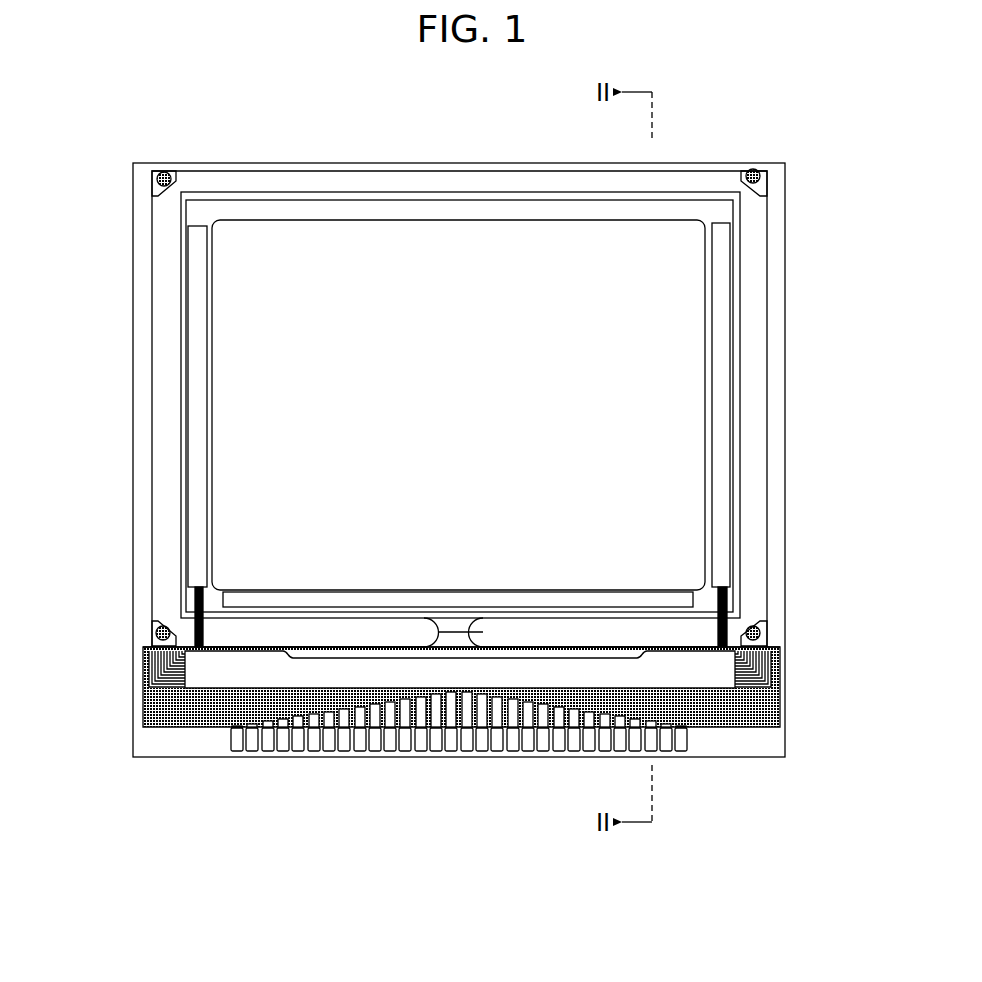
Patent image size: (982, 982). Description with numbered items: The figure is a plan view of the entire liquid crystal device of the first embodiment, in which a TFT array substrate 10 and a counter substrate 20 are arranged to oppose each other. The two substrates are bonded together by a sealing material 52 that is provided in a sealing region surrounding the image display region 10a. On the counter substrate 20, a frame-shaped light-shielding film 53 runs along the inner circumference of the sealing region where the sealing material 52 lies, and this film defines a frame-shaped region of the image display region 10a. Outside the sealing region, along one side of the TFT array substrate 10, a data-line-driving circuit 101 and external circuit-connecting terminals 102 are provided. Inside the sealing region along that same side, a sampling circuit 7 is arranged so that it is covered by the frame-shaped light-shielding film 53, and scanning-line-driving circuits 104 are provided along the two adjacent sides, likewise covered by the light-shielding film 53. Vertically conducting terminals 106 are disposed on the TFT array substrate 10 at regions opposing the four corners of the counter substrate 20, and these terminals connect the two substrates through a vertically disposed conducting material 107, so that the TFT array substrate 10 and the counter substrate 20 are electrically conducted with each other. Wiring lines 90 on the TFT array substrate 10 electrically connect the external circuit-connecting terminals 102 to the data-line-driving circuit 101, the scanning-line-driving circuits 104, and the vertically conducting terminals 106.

The TFT array substrate 10 is at (266, 163).
The counter substrate 20 is at (479, 171).
The image display region 10a is at (258, 353).
The sealing material 52 is at (752, 330).
The scanning-line-driving circuits 104 is at (726, 406).
The sampling circuit 7 is at (621, 600).
The frame-shaped light-shielding film 53 is at (732, 598).
The wiring lines 90 is at (146, 712).
The data-line-driving circuit 101 is at (212, 677).
The external circuit-connecting terminals 102 is at (424, 733).
The vertically conducting terminals 106 is at (176, 172).
The vertically disposed conducting material 107 is at (762, 637).